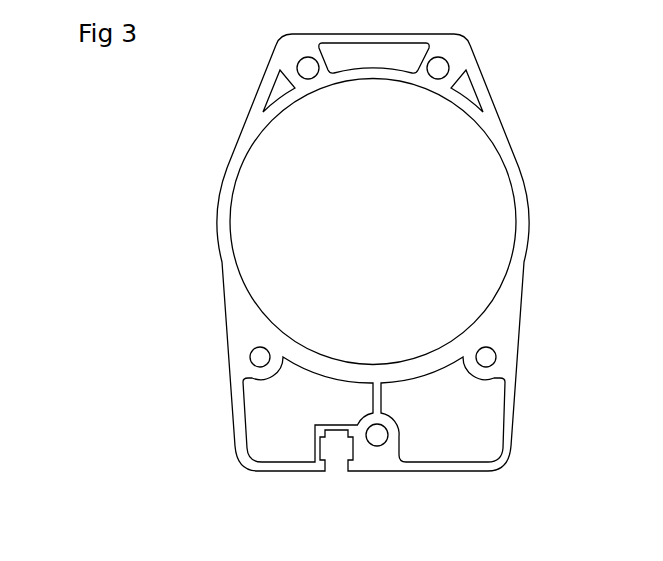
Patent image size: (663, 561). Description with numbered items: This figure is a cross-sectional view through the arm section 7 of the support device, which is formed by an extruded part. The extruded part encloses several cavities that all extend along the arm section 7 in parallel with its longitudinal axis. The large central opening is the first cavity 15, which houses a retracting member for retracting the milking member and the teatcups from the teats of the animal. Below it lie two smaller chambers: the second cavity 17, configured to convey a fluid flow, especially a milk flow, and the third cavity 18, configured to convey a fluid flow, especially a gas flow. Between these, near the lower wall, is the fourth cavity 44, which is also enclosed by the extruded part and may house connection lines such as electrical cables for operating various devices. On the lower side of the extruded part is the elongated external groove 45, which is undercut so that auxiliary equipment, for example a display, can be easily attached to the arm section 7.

The arm section 7 is at (500, 135).
The first cavity 15 is at (363, 231).
The second cavity 17 is at (437, 425).
The third cavity 18 is at (268, 425).
The fourth cavity 44 is at (378, 437).
The external groove 45 is at (333, 448).